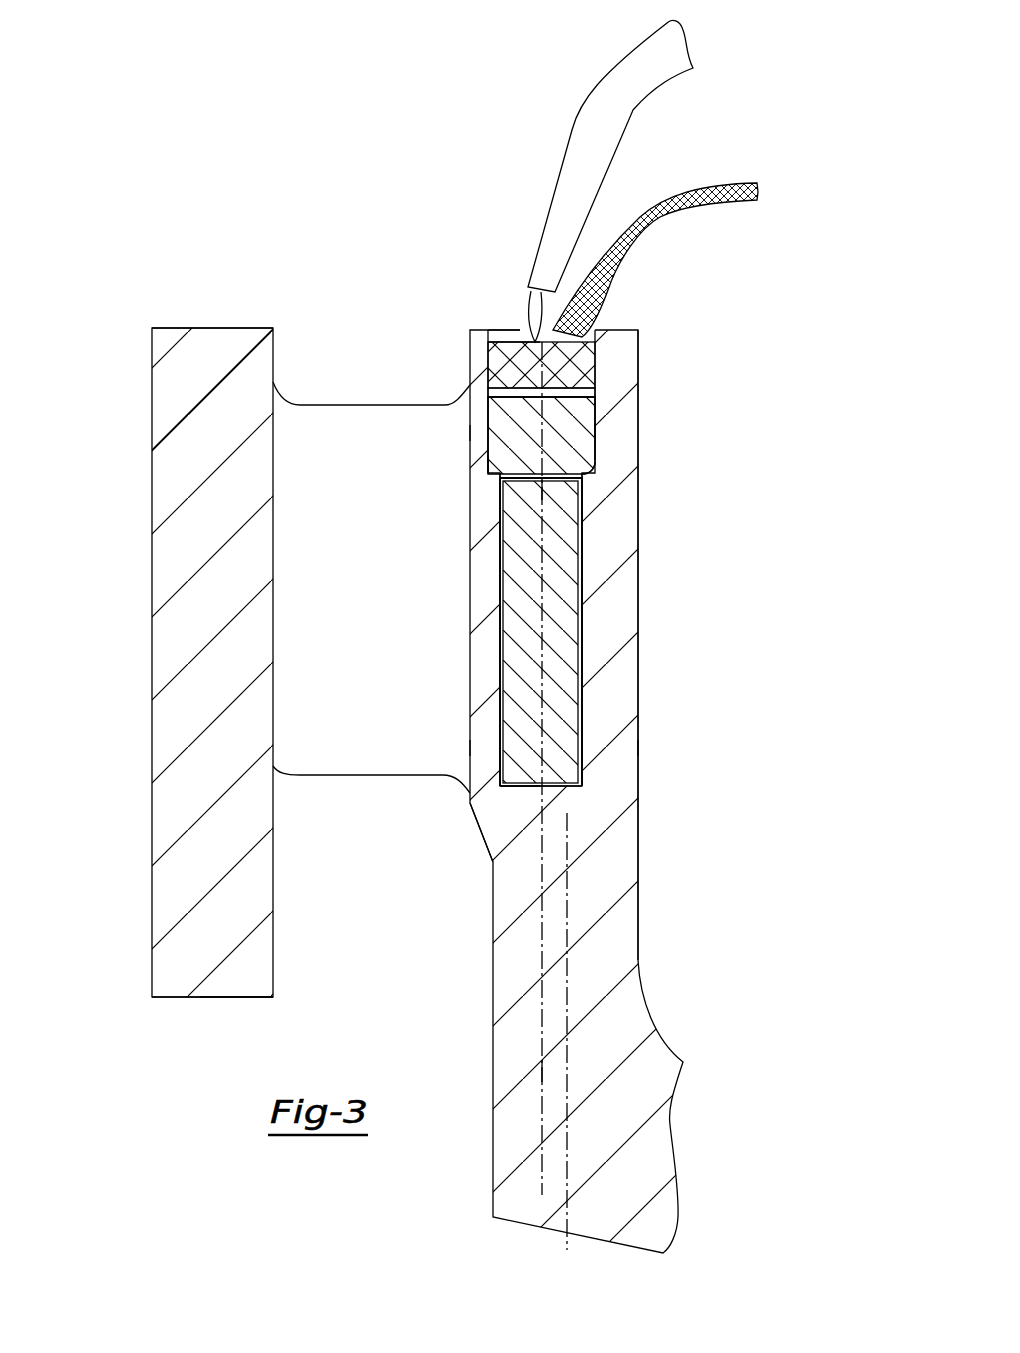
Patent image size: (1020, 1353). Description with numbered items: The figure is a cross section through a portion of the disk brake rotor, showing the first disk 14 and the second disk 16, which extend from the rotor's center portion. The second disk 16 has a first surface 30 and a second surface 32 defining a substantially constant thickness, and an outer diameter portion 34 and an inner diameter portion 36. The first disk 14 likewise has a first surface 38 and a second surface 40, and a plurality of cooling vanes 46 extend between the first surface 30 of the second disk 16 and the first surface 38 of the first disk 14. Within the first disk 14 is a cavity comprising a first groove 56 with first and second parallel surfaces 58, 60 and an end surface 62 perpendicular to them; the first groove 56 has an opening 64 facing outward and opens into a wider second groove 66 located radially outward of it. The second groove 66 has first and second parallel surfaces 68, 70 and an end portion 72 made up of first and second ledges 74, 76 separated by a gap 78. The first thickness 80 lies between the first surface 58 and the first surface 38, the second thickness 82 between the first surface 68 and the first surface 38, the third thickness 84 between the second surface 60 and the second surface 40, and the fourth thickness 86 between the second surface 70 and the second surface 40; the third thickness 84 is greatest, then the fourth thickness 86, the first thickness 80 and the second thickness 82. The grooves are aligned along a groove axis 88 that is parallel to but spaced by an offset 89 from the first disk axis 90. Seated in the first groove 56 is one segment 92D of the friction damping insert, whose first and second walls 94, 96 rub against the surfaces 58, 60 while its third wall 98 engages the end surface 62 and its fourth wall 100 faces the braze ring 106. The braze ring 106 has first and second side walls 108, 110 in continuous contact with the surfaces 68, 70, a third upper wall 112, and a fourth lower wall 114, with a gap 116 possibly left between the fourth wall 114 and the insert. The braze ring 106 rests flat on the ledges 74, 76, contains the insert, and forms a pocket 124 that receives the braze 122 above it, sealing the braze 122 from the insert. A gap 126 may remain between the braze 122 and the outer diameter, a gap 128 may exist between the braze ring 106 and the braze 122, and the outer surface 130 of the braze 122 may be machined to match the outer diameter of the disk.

The first disk 14 is at (500, 1000).
The second disk 16 is at (188, 985).
The first surface 30 is at (152, 368).
The second surface 32 is at (272, 462).
The outer diameter portion 34 is at (240, 318).
The inner diameter portion 36 is at (221, 1006).
The first surface 38 is at (443, 780).
The second surface 40 is at (638, 806).
The cooling vanes 46 is at (330, 413).
The first groove 56 is at (500, 790).
The first surface 58 is at (500, 710).
The second surface 60 is at (638, 697).
The end surface 62 is at (566, 787).
The opening 64 is at (557, 480).
The second groove 66 is at (597, 418).
The first parallel surface 68 is at (487, 473).
The second parallel surface 70 is at (592, 407).
The end portion 72 is at (518, 480).
The first ledge 74 is at (492, 480).
The second ledge 76 is at (570, 480).
The gap 78 is at (543, 487).
The first thickness 80 is at (490, 748).
The second thickness 82 is at (520, 433).
The third thickness 84 is at (592, 748).
The fourth thickness 86 is at (605, 432).
The groove axis 88 is at (545, 970).
The offset 89 is at (577, 1071).
The first disk axis 90 is at (567, 1240).
The insert segment 92D is at (570, 622).
The first wall 94 is at (500, 665).
The second wall 96 is at (583, 655).
The third wall 98 is at (507, 787).
The fourth wall 100 is at (582, 540).
The braze ring 106 is at (555, 461).
The first side wall 108 is at (487, 457).
The second side wall 110 is at (587, 462).
The third upper wall 112 is at (592, 377).
The fourth lower wall 114 is at (527, 480).
The gap 116 is at (507, 480).
The braze 122 is at (553, 333).
The pocket 124 is at (592, 345).
The gap 126 is at (505, 352).
The gap 128 is at (490, 362).
The outer surface 130 is at (532, 340).